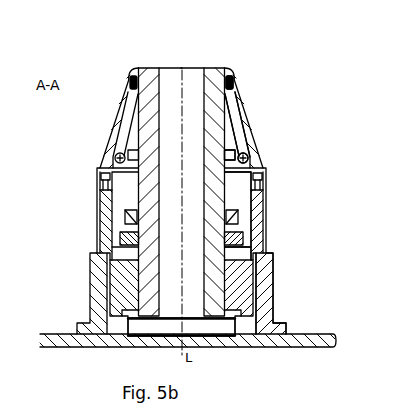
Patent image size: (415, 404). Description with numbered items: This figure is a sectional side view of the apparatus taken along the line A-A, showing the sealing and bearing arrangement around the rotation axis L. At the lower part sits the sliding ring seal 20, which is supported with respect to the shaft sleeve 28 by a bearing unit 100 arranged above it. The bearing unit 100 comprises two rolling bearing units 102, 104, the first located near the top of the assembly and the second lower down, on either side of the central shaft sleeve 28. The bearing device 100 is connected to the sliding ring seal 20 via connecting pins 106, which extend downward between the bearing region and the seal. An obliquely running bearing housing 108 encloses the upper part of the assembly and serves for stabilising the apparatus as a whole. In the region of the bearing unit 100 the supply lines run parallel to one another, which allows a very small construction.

The bearing unit 100 is at (292, 134).
The rolling bearing unit 102 is at (234, 80).
The bearing housing 108 is at (250, 112).
The rolling bearing unit 104 is at (266, 151).
The connecting pins 106 is at (262, 207).
The sliding ring seal 20 is at (279, 251).
The shaft sleeve 28 is at (213, 296).